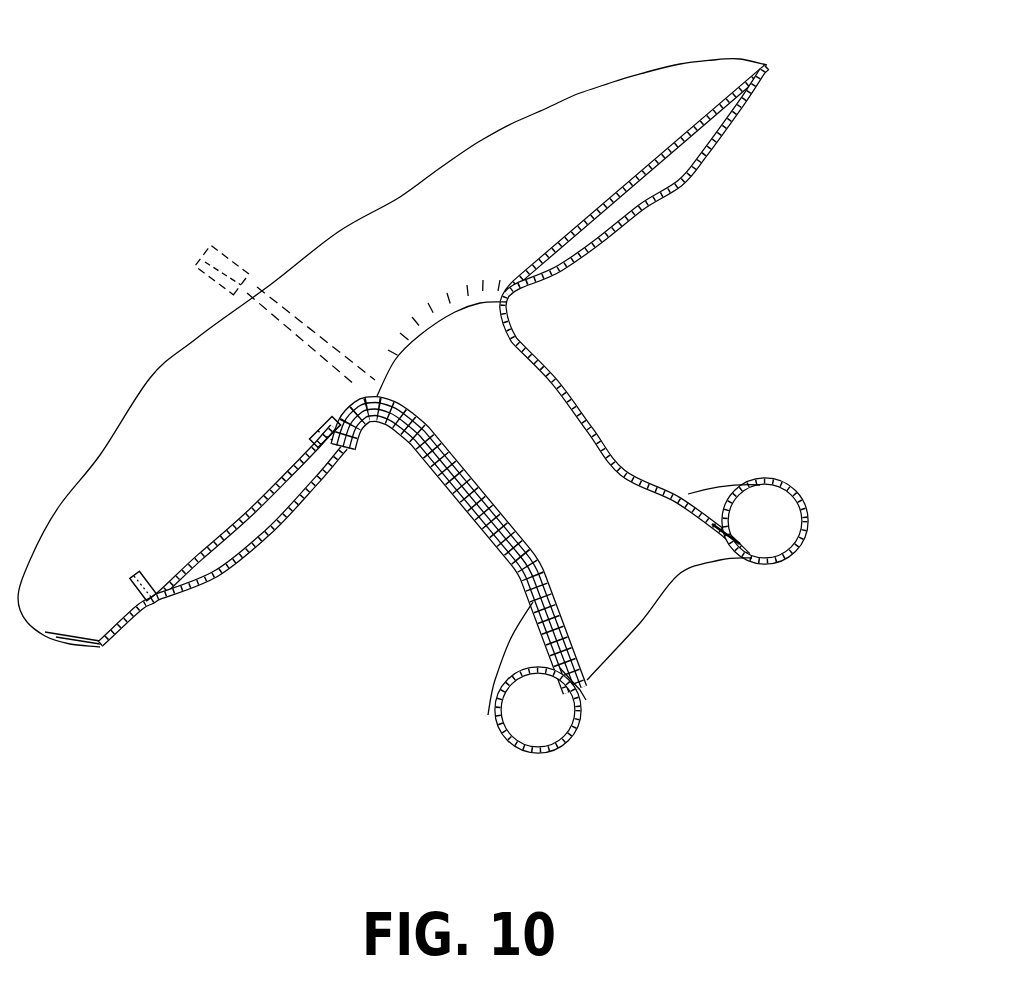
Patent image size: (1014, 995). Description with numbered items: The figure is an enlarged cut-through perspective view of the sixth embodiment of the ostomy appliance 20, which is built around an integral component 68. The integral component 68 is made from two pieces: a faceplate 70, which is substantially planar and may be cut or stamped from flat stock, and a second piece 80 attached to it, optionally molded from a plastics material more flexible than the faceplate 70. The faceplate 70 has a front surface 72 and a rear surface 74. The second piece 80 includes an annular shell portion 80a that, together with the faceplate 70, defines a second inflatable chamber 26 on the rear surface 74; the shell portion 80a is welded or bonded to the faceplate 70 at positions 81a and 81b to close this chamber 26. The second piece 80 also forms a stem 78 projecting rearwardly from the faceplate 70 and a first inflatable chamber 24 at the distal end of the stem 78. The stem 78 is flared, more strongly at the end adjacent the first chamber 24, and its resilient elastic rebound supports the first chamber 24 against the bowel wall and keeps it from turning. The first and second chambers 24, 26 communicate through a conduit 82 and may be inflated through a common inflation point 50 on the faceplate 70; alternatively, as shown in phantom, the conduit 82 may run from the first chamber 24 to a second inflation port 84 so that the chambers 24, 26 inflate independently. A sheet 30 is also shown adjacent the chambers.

The ostomy appliance 20 is at (236, 135).
The first inflatable chamber 24 is at (780, 510).
The second inflatable chamber 26 is at (700, 152).
The membrane sheet 30 is at (637, 577).
The common inflation point 50 is at (137, 577).
The integral component 68 is at (398, 162).
The faceplate 70 is at (503, 130).
The front surface 72 is at (595, 102).
The rear surface 74 is at (187, 570).
The stem 78 is at (452, 492).
The second piece 80 is at (688, 483).
The annular shell portion 80a is at (680, 229).
The attachment position 81a is at (723, 110).
The attachment position 81b is at (507, 303).
The conduit 82 is at (483, 494).
The second inflation port 84 is at (232, 257).